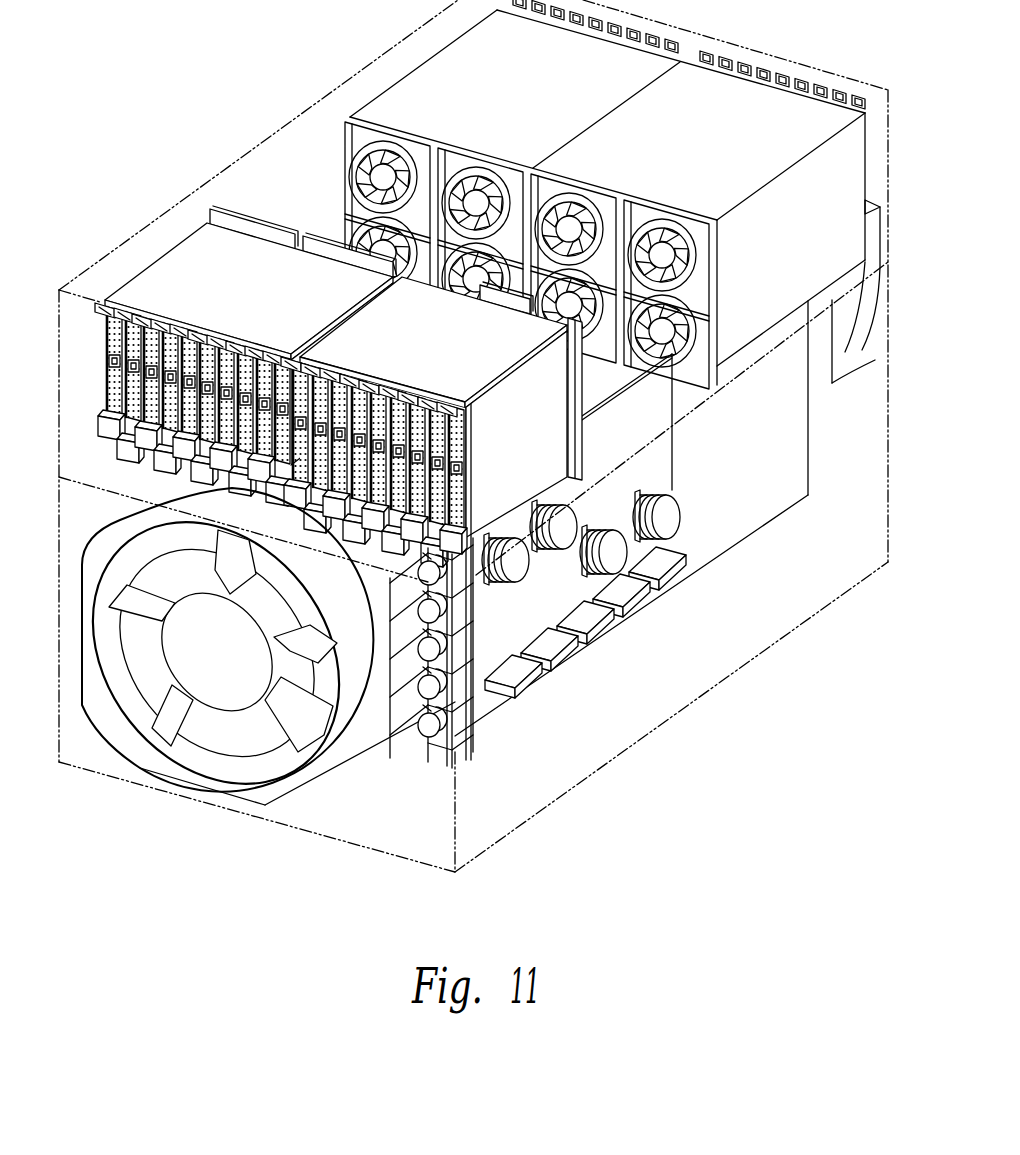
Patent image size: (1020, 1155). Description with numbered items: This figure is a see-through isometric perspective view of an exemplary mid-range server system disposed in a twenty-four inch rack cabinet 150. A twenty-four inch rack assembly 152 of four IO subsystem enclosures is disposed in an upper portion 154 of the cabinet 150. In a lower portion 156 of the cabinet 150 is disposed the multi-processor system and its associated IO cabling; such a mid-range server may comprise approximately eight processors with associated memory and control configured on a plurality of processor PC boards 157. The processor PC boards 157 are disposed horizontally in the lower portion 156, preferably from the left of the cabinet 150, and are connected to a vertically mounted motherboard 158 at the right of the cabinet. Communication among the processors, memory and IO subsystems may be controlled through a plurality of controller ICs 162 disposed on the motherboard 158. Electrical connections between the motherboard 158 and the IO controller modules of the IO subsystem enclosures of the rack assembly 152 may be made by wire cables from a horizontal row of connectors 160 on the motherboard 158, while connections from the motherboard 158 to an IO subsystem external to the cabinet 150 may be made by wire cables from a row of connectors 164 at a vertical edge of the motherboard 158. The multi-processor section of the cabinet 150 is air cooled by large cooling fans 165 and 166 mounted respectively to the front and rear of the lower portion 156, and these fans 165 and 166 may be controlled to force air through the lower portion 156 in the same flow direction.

The rack cabinet 150 is at (545, 828).
The rack assembly 152 is at (232, 164).
The upper portion 154 is at (84, 332).
The lower portion 156 is at (536, 745).
The processor PC boards 157 is at (418, 690).
The motherboard 158 is at (650, 408).
The row of connectors 160 is at (643, 600).
The controller ICs 162 is at (668, 518).
The row of connectors 164 is at (446, 742).
The cooling fan 165 is at (213, 784).
The cooling fan 166 is at (847, 388).